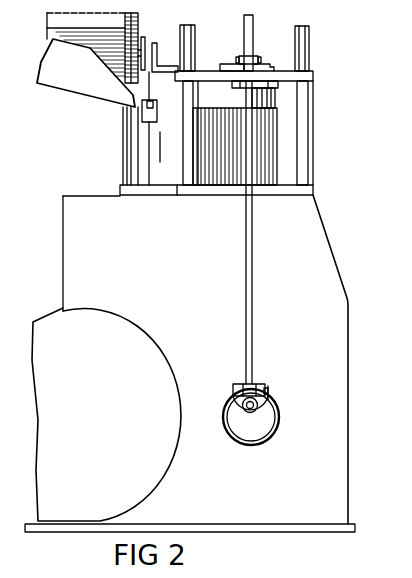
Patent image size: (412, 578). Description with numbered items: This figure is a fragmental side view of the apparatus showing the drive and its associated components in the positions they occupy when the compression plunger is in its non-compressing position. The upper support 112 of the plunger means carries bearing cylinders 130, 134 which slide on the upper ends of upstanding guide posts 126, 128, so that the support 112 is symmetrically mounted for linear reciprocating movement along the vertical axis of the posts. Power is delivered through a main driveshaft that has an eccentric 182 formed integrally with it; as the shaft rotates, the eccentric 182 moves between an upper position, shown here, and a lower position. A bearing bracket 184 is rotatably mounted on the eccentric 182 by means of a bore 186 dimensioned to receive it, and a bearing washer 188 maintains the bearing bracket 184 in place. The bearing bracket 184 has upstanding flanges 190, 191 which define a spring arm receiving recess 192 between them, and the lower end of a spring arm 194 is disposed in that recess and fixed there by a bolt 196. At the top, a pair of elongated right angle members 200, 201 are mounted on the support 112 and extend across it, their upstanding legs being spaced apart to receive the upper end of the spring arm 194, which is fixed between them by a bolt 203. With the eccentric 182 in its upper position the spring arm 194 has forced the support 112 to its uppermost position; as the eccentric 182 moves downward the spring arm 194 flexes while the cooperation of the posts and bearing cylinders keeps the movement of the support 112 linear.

The support 112 is at (314, 75).
The upstanding post 126 is at (308, 136).
The upstanding post 128 is at (192, 176).
The bearing cylinder 130 is at (194, 37).
The bearing cylinder 134 is at (309, 56).
The eccentric 182 is at (263, 425).
The bearing bracket 184 is at (269, 397).
The bore 186 is at (236, 401).
The bearing washer 188 is at (262, 409).
The upstanding flange 190 is at (263, 388).
The upstanding flange 191 is at (244, 386).
The spring arm receiving recess 192 is at (258, 386).
The spring arm 194 is at (254, 243).
The bolt 196 is at (268, 392).
The right angle member 200 is at (271, 68).
The right angle member 201 is at (230, 64).
The bolt 203 is at (254, 56).